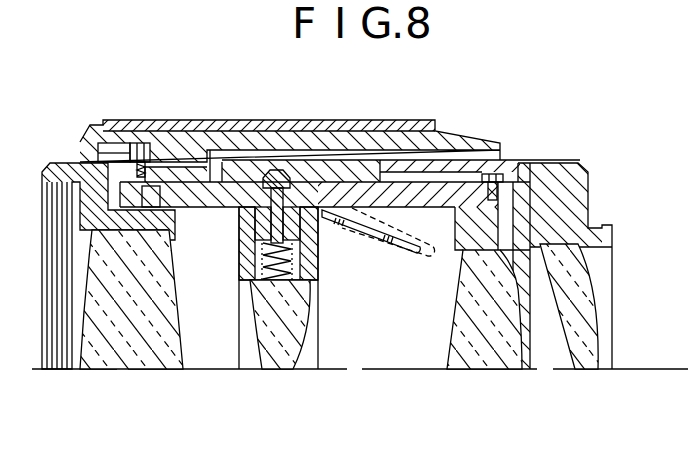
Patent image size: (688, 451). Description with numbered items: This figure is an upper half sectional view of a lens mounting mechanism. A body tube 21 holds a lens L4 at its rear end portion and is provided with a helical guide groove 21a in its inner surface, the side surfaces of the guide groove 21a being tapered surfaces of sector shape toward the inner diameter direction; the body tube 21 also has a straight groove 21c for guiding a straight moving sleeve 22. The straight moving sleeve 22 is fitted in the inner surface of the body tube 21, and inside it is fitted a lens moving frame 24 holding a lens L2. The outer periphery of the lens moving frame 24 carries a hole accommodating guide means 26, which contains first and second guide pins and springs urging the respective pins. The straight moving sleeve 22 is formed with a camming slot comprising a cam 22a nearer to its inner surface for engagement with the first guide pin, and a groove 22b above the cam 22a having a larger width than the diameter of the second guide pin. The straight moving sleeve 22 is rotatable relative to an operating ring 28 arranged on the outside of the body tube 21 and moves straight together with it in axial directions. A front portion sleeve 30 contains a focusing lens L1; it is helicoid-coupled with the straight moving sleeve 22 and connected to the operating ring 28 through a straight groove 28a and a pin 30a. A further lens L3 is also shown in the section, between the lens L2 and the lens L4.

The body tube 21 is at (552, 192).
The helical guide groove 21a is at (278, 170).
The straight groove 21c is at (460, 175).
The straight moving sleeve 22 is at (402, 193).
The cam 22a is at (367, 235).
The groove 22b is at (428, 268).
The lens moving frame 24 is at (312, 262).
The guide means 26 is at (238, 222).
The operating ring 28 is at (193, 142).
The straight groove 28a is at (118, 147).
The front portion sleeve 30 is at (58, 162).
The pin 30a is at (143, 152).
The focusing lens L1 is at (133, 364).
The lens L2 is at (282, 364).
The third lens L3 is at (483, 364).
The lens L4 is at (590, 364).